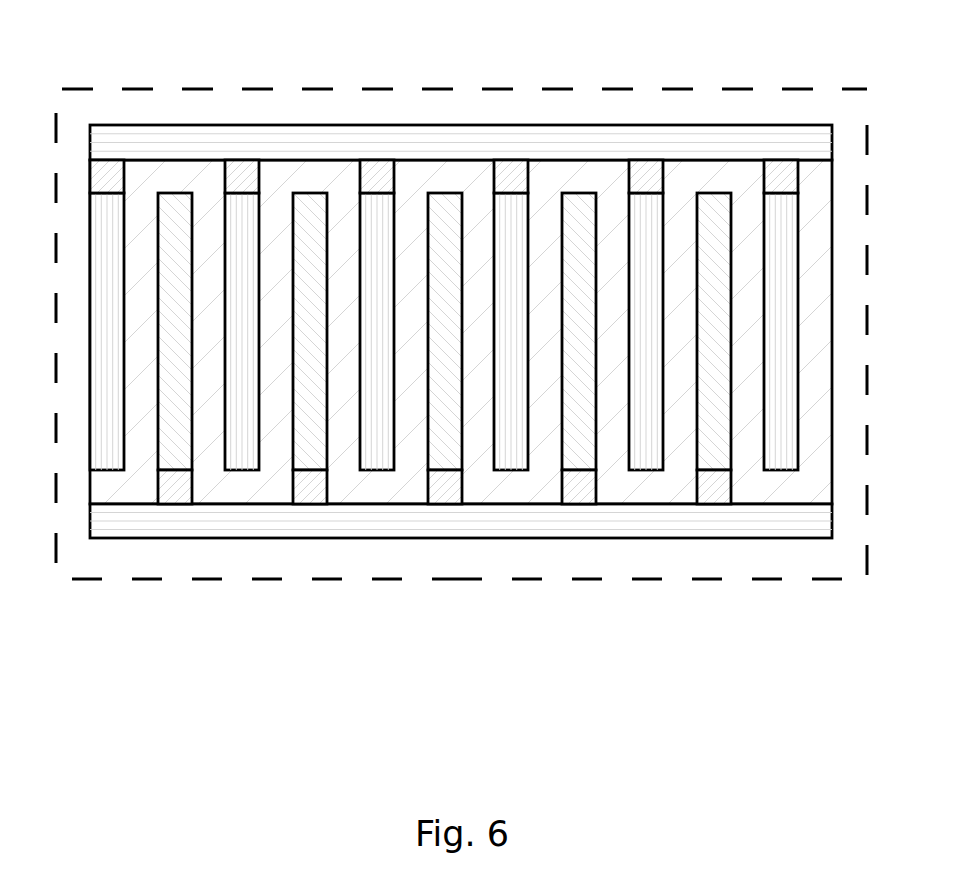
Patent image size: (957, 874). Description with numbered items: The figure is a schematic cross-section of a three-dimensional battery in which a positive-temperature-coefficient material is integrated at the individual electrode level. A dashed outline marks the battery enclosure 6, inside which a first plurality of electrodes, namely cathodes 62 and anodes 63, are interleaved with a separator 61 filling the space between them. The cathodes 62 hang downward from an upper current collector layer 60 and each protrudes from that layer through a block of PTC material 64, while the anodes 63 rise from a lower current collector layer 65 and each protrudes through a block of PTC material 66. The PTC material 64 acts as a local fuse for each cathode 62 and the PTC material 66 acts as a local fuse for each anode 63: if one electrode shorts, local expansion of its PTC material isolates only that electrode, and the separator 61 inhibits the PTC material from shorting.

The battery enclosure 6 is at (712, 580).
The current collector layer 60 is at (147, 142).
The separator 61 is at (547, 192).
The cathode 62 is at (243, 239).
The anode 63 is at (443, 218).
The PTC material 64 is at (648, 177).
The current collector layer 65 is at (133, 522).
The PTC material 66 is at (312, 485).